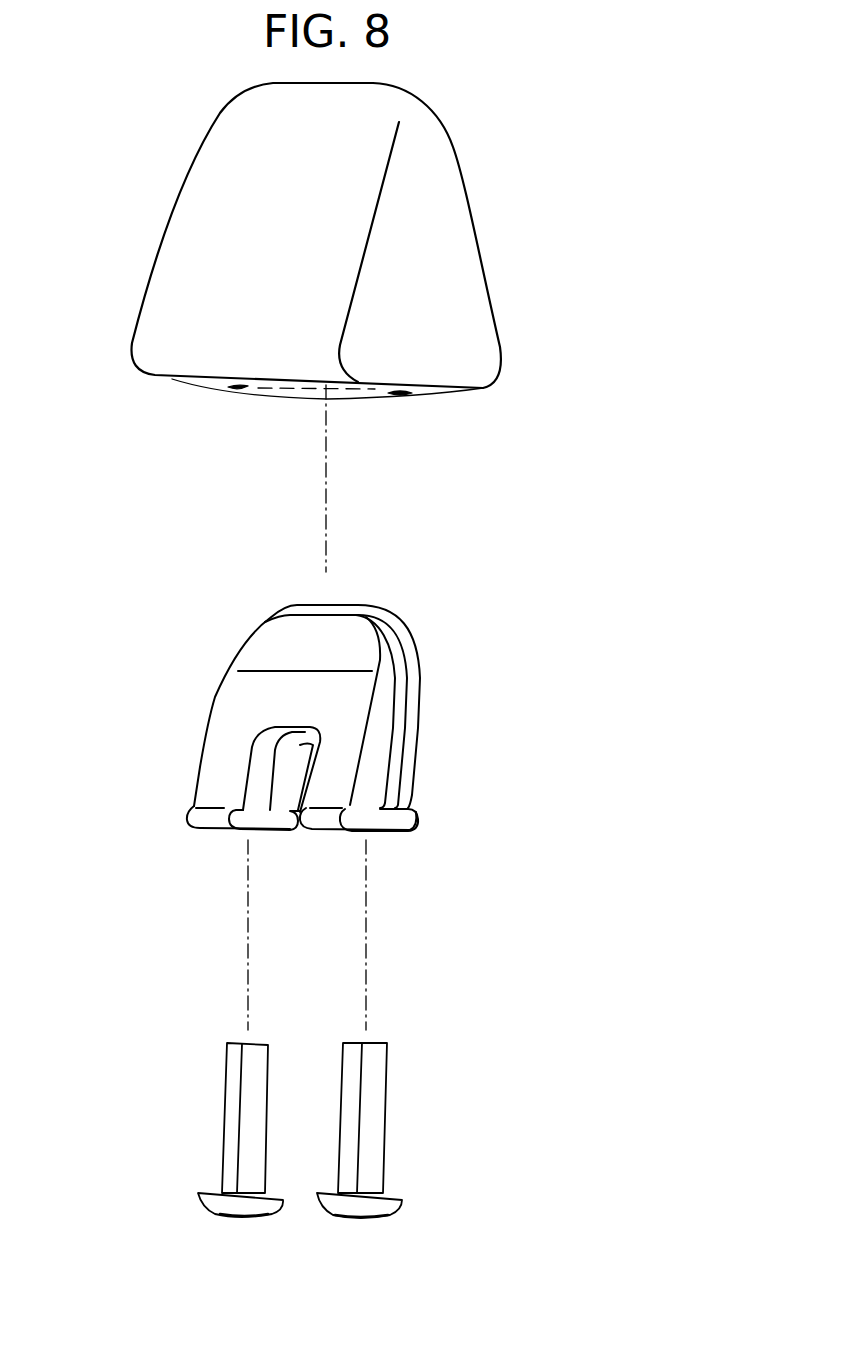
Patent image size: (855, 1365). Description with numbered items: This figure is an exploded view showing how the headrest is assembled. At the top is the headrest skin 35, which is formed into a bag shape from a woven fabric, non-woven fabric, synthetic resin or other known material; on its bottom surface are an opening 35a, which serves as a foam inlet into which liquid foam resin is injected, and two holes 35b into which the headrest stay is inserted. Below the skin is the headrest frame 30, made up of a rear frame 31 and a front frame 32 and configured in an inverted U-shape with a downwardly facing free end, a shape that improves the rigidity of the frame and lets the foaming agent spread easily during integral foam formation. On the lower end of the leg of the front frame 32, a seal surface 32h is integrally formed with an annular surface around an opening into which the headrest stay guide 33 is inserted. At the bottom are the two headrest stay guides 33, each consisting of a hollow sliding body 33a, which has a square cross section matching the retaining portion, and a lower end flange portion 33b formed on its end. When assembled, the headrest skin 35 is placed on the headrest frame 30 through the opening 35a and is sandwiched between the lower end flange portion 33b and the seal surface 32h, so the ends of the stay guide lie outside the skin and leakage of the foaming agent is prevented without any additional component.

The headrest frame 30 is at (592, 592).
The rear frame 31 is at (419, 697).
The front frame 32 is at (350, 633).
The seal surface 32h is at (233, 833).
The headrest stay guide 33 is at (329, 1157).
The sliding body 33a is at (235, 1078).
The lower end flange portion 33b is at (210, 1202).
The headrest skin 35 is at (508, 175).
The opening 35a is at (307, 392).
The holes 35b is at (235, 389).